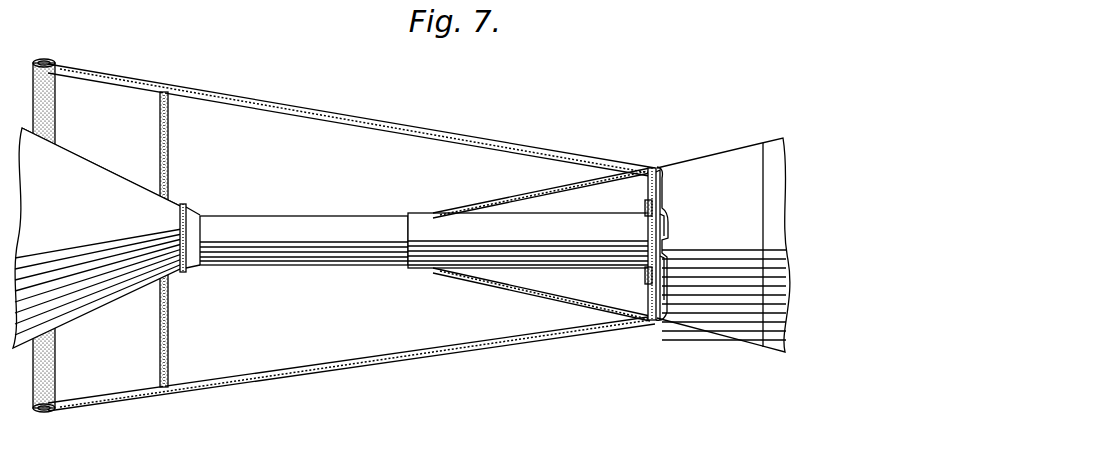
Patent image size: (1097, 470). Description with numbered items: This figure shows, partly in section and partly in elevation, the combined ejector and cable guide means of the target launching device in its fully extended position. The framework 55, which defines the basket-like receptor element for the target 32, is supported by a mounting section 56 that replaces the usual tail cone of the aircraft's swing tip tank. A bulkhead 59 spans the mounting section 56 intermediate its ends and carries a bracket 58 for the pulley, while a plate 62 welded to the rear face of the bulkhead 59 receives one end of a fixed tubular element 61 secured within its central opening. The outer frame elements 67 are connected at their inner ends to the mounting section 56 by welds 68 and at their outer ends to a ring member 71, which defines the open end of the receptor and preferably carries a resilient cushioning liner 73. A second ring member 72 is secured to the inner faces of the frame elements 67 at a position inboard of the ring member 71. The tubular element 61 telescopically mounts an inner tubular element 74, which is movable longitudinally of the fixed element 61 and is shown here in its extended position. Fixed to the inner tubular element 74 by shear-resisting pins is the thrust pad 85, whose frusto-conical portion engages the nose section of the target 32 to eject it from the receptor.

The target 32 is at (97, 163).
The framework 55 is at (510, 136).
The mounting section 56 is at (708, 155).
The bracket 58 is at (668, 226).
The bulkhead 59 is at (648, 180).
The tubular element 61 is at (590, 214).
The plate 62 is at (644, 277).
The outer frame elements 67 is at (462, 133).
The welds 68 is at (655, 166).
The ring member 71 is at (45, 413).
The second ring member 72 is at (169, 347).
The cushioning liner 73 is at (55, 392).
The inner tubular element 74 is at (320, 214).
The thrust pad 85 is at (188, 273).